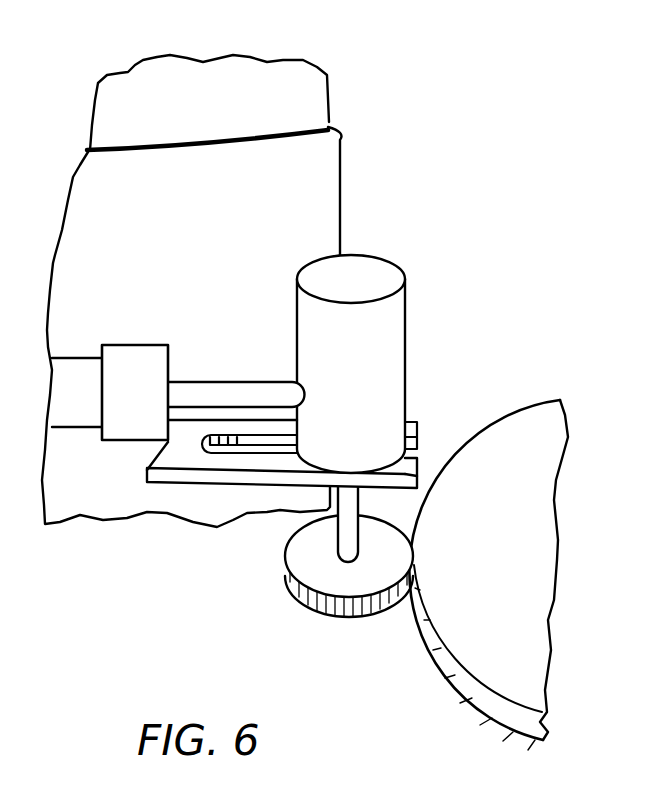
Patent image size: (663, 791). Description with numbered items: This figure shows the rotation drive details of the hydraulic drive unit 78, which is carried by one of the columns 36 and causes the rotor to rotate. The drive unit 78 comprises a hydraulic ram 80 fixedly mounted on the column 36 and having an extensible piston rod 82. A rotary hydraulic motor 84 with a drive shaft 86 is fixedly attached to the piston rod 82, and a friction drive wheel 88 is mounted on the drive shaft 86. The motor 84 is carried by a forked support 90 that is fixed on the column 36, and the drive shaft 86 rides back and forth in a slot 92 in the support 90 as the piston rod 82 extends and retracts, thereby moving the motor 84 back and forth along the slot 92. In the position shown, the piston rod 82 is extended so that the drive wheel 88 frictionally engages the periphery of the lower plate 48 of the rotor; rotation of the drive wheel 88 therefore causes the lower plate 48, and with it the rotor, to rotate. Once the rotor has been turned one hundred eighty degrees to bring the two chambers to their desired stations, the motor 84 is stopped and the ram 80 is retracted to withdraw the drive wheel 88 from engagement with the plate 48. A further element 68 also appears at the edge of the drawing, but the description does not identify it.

The column 36 is at (342, 177).
The lower plate 48 is at (533, 403).
The element 68 is at (650, 790).
The hydraulic drive unit 78 is at (513, 157).
The hydraulic ram 80 is at (125, 368).
The piston rod 82 is at (257, 393).
The rotary hydraulic motor 84 is at (393, 335).
The drive shaft 86 is at (348, 523).
The friction drive wheel 88 is at (350, 618).
The forked support 90 is at (173, 483).
The slot 92 is at (258, 450).